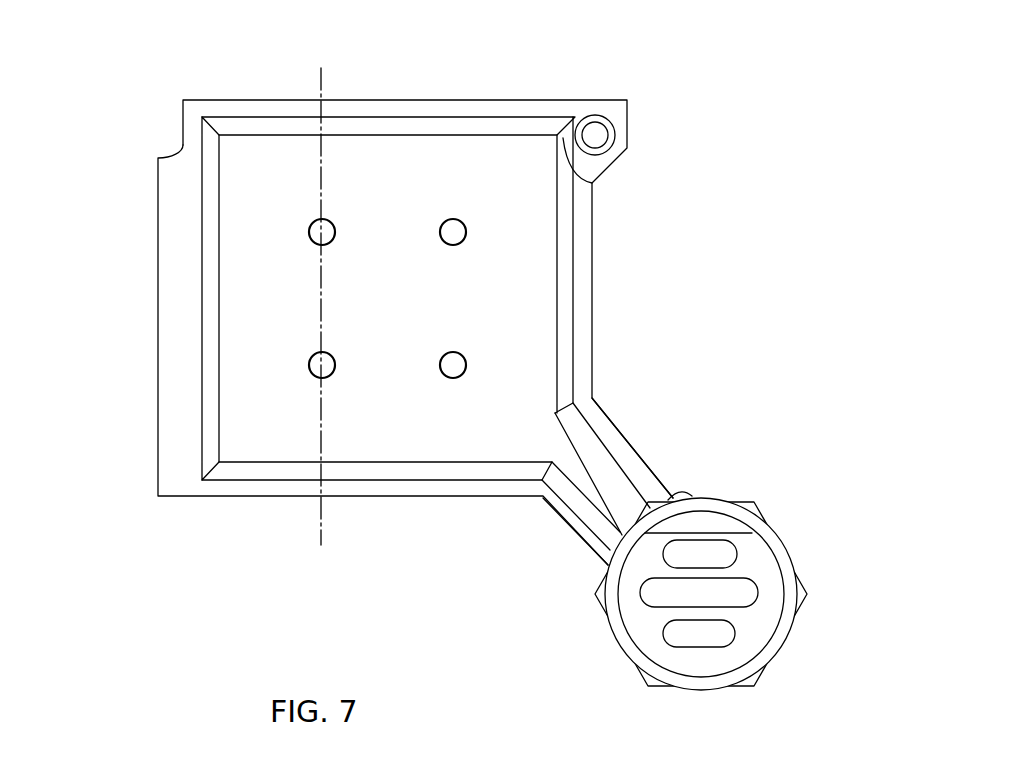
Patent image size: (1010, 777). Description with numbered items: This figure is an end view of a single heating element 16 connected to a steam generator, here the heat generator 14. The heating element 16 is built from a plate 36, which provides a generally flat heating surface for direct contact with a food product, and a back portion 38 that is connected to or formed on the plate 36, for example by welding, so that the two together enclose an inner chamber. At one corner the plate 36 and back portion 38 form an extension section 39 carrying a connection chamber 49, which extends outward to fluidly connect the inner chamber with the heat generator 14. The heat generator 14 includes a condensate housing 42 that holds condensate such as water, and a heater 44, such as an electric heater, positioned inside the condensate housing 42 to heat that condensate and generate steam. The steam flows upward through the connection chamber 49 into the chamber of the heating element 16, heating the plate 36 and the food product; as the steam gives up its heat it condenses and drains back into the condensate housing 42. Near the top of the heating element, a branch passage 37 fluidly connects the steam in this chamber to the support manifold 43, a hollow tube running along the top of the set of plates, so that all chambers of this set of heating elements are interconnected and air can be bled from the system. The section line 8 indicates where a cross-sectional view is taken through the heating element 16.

The section line 8- 8 is at (356, 545).
The heat generator 14 is at (786, 569).
The heating element 16 is at (408, 319).
The plate 36 is at (473, 110).
The branch passage 37 is at (664, 153).
The back portion 38 is at (232, 363).
The extension section 39 is at (645, 455).
The condensate housing 42 is at (788, 638).
The second support manifold 43 is at (615, 123).
The heater 44 is at (727, 629).
The connection chamber 49 is at (600, 485).